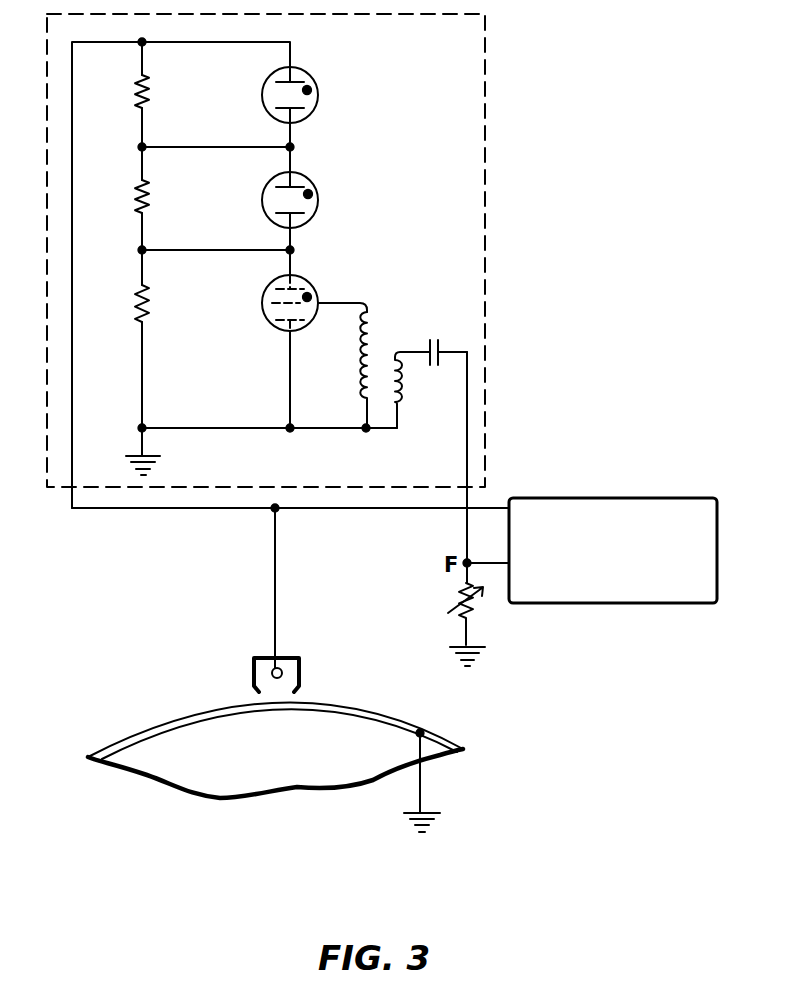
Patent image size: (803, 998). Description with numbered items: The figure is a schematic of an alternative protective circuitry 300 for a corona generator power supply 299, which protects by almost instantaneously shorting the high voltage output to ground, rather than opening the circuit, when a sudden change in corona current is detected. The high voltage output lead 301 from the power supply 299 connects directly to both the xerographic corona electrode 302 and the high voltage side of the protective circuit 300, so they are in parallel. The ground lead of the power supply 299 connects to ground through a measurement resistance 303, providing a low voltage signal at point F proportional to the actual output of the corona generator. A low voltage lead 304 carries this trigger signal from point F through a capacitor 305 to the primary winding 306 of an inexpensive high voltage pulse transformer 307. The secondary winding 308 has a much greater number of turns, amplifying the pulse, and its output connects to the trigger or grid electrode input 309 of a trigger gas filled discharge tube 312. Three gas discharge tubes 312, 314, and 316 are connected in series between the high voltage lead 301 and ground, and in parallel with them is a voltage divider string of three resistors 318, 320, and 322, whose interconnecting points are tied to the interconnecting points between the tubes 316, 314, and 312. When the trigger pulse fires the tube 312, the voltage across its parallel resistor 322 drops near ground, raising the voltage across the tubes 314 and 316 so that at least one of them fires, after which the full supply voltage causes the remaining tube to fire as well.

The corona generator power supply 299 is at (668, 498).
The protective circuitry 300 is at (500, 99).
The high voltage output lead 301 is at (167, 511).
The xerographic corona electrode 302 is at (264, 661).
The variable resistor 303 is at (460, 594).
The low voltage lead 304 is at (464, 432).
The capacitor 305 is at (438, 345).
The primary winding 306 is at (403, 382).
The high voltage pulse transformer 307 is at (386, 346).
The secondary winding 308 is at (360, 373).
The trigger or grid electrode input 309 is at (343, 302).
The trigger gas filled discharge tube 312 is at (270, 322).
The gas discharge tube 314 is at (319, 208).
The gas discharge tube 316 is at (319, 98).
The resistor 318 is at (149, 103).
The resistor 320 is at (162, 203).
The resistor 322 is at (162, 307).